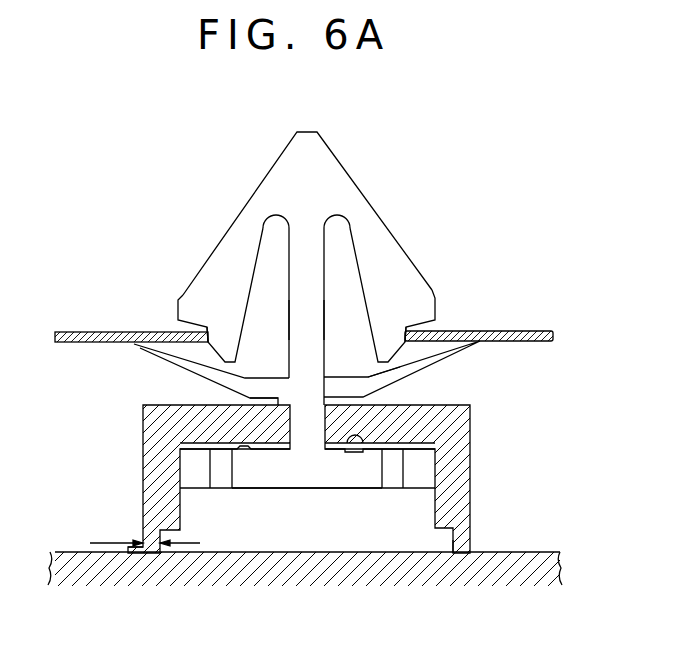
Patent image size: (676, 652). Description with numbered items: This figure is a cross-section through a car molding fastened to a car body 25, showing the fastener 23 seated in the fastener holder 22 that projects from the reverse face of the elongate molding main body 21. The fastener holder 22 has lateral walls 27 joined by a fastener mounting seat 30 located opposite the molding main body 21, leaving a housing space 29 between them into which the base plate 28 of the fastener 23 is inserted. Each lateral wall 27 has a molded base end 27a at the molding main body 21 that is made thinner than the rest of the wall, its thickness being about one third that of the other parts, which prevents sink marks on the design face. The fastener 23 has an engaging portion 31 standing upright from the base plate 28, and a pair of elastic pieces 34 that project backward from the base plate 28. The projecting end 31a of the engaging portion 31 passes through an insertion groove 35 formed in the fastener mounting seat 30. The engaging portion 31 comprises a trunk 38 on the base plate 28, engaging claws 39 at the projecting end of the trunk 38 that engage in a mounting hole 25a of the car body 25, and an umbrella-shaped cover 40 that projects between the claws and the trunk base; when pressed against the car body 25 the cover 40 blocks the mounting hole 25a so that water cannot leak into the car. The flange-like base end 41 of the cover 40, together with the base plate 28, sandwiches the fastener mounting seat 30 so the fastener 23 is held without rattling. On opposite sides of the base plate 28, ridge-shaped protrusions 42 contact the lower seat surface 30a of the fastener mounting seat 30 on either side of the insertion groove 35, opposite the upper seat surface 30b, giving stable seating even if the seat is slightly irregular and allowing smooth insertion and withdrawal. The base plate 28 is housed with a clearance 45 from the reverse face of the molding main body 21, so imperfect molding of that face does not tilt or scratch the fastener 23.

The molding main body 21 is at (334, 534).
The fastener holder 22 is at (337, 516).
The fastener 23 is at (302, 362).
The car body 25 is at (520, 331).
The mounting hole 25a is at (348, 300).
The lateral walls 27 is at (438, 470).
The molded base end 27a is at (130, 556).
The base plate 28 is at (268, 545).
The housing space 29 is at (210, 545).
The fastener mounting seat 30 is at (400, 393).
The lower seat surface 30a is at (400, 401).
The upper seat surface 30b is at (388, 452).
The engaging portion 31 is at (330, 149).
The projecting end 31a is at (240, 403).
The elastic pieces 34 is at (196, 465).
The insertion groove 35 is at (362, 330).
The trunk 38 is at (288, 262).
The engaging claws 39 is at (195, 270).
The cover 40 is at (133, 348).
The base end 41 is at (280, 402).
The protrusions 42 is at (240, 447).
The clearance 45 is at (262, 549).